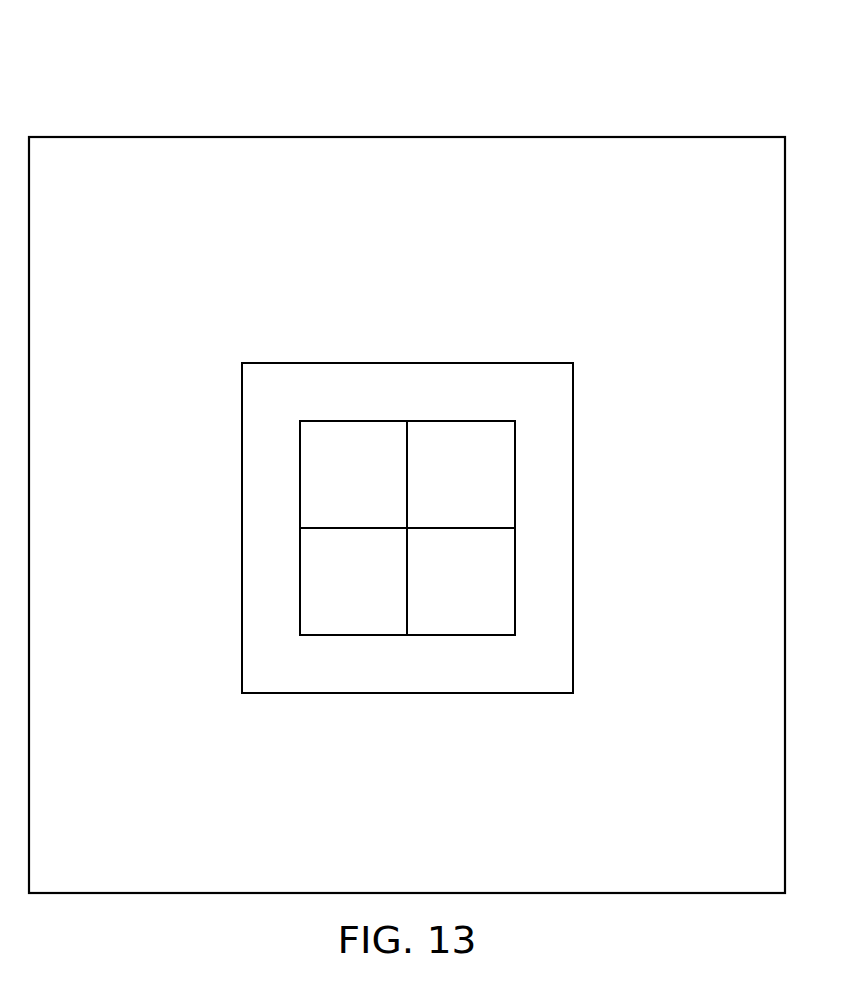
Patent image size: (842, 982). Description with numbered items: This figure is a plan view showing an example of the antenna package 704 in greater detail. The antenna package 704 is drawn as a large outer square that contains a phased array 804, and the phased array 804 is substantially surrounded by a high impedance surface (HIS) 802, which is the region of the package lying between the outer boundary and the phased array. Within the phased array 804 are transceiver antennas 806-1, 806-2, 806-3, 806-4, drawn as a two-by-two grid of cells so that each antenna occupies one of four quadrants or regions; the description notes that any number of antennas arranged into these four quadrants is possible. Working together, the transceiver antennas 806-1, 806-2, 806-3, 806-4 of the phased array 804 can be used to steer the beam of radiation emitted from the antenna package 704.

The antenna package 704 is at (640, 130).
The high impedance surface (HIS) 802 is at (385, 228).
The phased array 804 is at (394, 421).
The transceiver antenna 806-1 is at (496, 508).
The transceiver antenna 806-2 is at (496, 615).
The transceiver antenna 806-3 is at (388, 508).
The transceiver antenna 806-4 is at (388, 615).